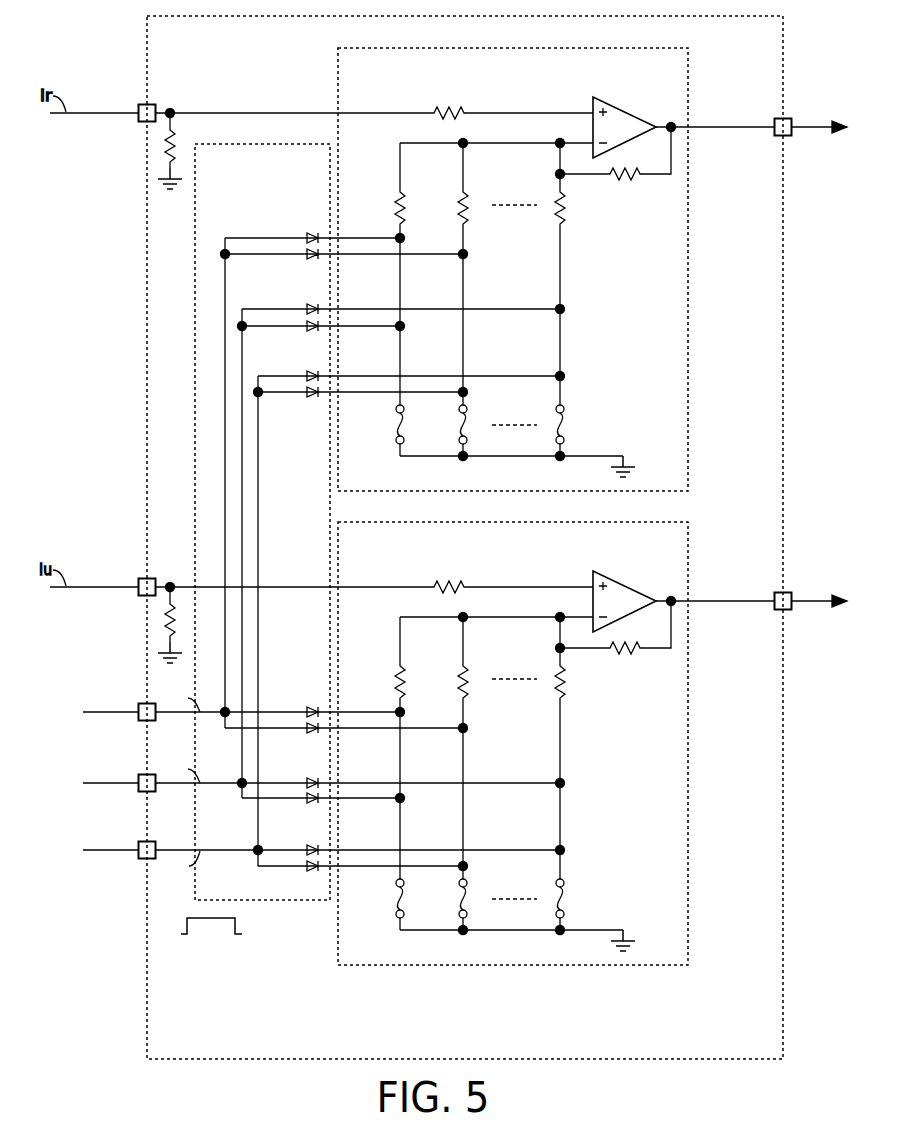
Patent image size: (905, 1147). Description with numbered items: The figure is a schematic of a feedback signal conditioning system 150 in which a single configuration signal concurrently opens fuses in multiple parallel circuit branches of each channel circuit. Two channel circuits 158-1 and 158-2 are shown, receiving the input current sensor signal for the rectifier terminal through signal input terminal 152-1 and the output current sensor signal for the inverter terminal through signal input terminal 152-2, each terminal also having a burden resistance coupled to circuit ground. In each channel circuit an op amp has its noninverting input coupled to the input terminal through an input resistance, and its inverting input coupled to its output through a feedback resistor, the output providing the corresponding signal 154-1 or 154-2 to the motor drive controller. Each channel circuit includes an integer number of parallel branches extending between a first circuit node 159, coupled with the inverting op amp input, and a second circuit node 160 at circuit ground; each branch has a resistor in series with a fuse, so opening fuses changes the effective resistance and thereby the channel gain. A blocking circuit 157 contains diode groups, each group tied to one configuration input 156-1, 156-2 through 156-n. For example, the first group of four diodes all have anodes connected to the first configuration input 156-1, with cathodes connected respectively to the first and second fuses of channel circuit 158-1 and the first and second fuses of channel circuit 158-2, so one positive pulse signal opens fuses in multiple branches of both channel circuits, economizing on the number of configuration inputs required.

The feedback signal conditioning system 150 is at (146, 45).
The signal input terminal 152-1 is at (130, 102).
The signal input terminal 152-2 is at (130, 576).
The output signal 154-1 is at (768, 118).
The output signal 154-2 is at (768, 592).
The configuration input 156-1 is at (130, 700).
The configuration input 156-2 is at (130, 771).
The configuration input 156-n is at (130, 838).
The blocking circuit 157 is at (256, 143).
The channel circuit 158-1 is at (337, 70).
The channel circuit 158-2 is at (337, 544).
The first circuit node 159 is at (410, 143).
The second circuit node 160 is at (410, 457).